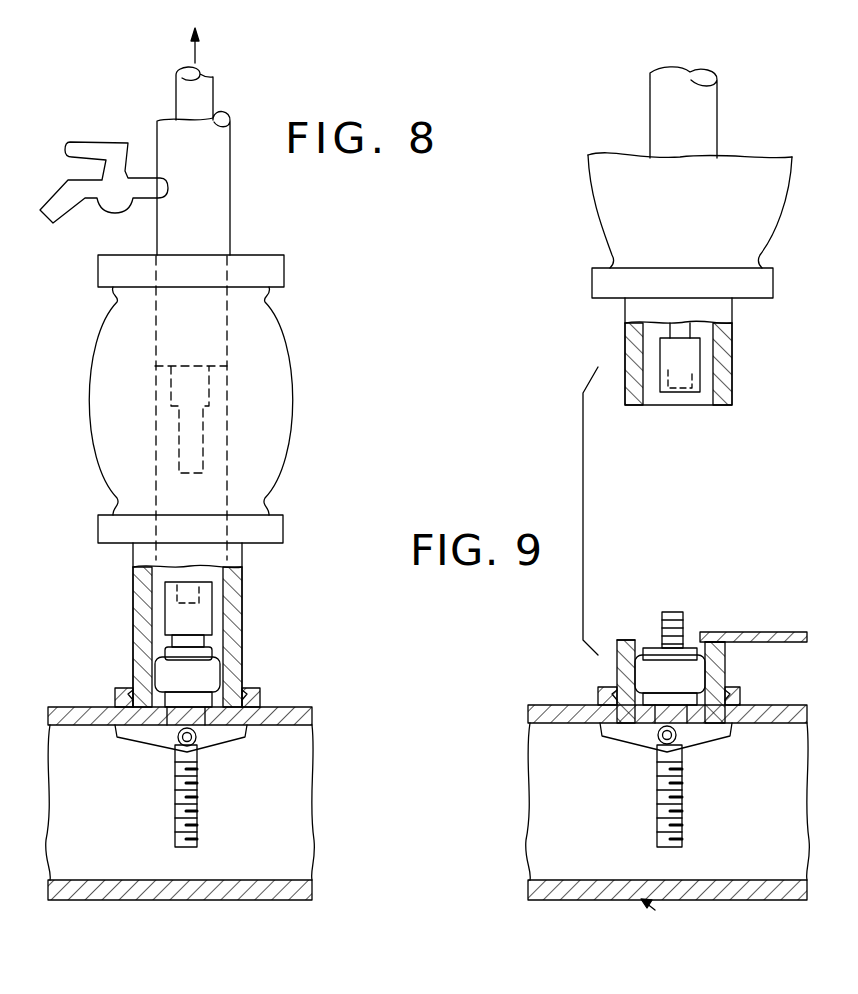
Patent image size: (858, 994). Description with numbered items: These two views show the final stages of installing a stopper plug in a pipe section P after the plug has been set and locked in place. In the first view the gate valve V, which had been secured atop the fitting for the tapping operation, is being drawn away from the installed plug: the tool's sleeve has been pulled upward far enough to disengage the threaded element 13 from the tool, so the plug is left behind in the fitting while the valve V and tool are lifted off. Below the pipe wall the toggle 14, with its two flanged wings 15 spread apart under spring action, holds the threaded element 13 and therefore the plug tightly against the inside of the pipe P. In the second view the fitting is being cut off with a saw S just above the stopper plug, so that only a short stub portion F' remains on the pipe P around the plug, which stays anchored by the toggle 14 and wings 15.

In FIG. 8, the threaded element 13 is at (197, 828).
In FIG. 9, the threaded element 13 is at (683, 820).
In FIG. 8, the toggle 14 is at (175, 769).
In FIG. 9, the toggle 14 is at (660, 773).
In FIG. 8, the flanged wings 15 is at (142, 737).
In FIG. 9, the flanged wings 15 is at (622, 738).
In FIG. 8, the gate valve V is at (286, 478).
In FIG. 9, the gate valve V is at (790, 243).
In FIG. 8, the pipe section P is at (289, 692).
In FIG. 9, the pipe section P is at (532, 688).
In FIG. 9, the saw S is at (772, 624).
In FIG. 9, the stub portion F' is at (706, 667).